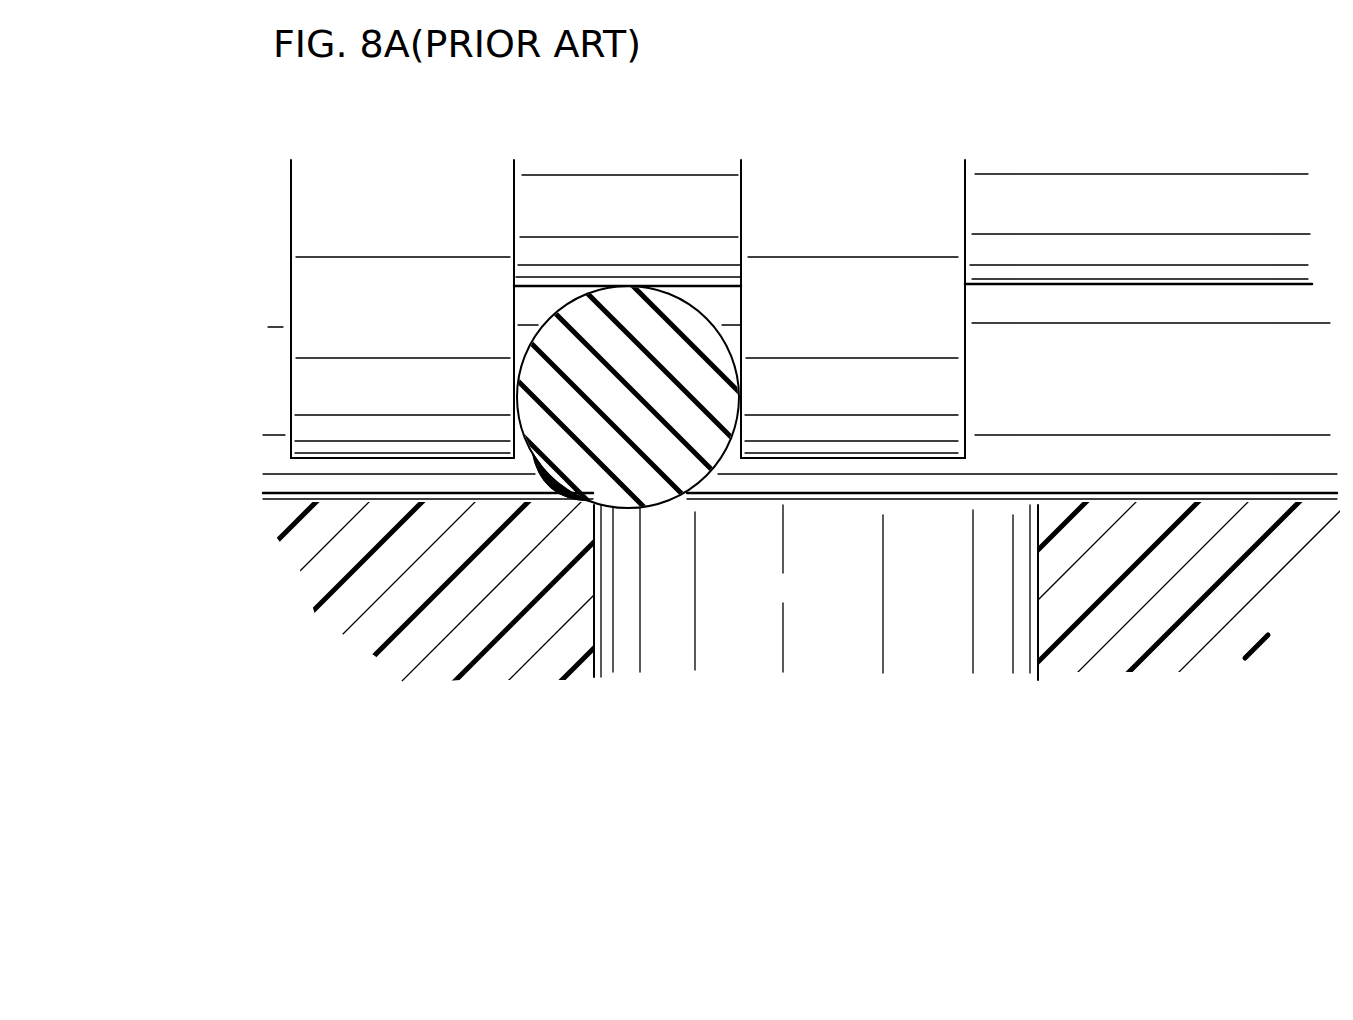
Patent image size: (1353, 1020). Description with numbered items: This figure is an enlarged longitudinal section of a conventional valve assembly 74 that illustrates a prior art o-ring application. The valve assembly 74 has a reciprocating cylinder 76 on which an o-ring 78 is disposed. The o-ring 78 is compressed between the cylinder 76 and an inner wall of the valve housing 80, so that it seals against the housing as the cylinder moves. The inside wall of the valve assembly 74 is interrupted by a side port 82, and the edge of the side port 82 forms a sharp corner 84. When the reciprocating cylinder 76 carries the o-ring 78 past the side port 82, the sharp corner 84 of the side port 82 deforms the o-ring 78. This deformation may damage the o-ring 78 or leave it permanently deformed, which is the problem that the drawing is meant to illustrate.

The valve assembly 74 is at (756, 270).
The reciprocating cylinder 76 is at (369, 327).
The o-ring 78 is at (630, 413).
The valve housing 80 is at (500, 530).
The side port 82 is at (800, 609).
The sharp corner 84 is at (918, 519).